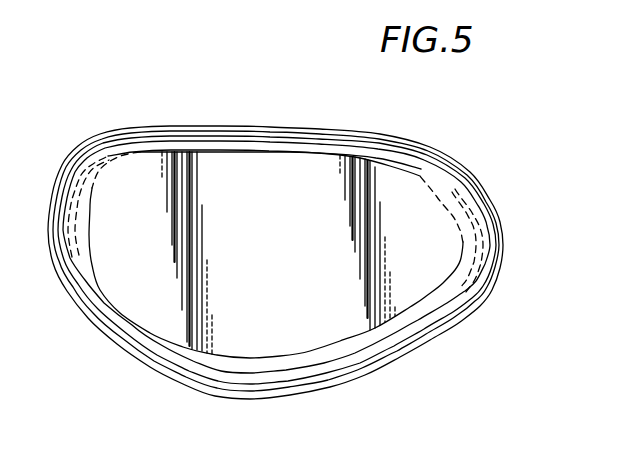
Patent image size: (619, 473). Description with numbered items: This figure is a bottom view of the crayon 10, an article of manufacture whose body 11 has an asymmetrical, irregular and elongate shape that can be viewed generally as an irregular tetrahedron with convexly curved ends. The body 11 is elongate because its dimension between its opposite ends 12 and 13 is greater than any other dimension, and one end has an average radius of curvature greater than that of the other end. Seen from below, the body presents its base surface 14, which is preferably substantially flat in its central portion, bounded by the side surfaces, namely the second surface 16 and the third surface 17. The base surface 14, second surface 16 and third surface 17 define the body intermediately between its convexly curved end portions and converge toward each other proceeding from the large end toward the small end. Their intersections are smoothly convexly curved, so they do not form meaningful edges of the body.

The crayon 10 is at (493, 129).
The body 11 is at (128, 193).
The end 12 is at (48, 217).
The end 13 is at (504, 237).
The base surface 14 is at (278, 258).
The second surface 16 is at (247, 127).
The third surface 17 is at (262, 399).